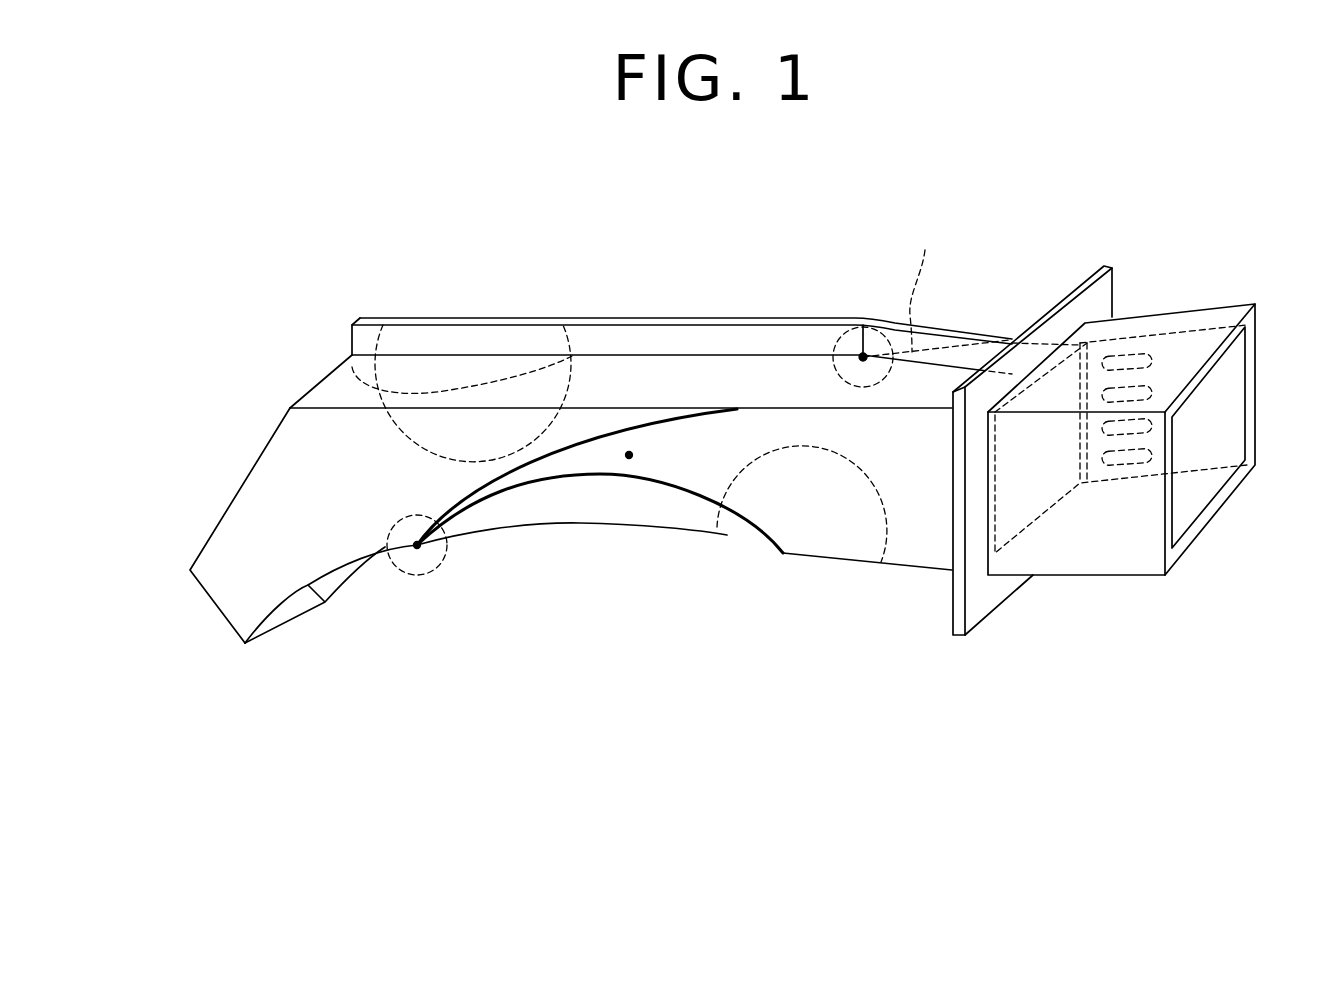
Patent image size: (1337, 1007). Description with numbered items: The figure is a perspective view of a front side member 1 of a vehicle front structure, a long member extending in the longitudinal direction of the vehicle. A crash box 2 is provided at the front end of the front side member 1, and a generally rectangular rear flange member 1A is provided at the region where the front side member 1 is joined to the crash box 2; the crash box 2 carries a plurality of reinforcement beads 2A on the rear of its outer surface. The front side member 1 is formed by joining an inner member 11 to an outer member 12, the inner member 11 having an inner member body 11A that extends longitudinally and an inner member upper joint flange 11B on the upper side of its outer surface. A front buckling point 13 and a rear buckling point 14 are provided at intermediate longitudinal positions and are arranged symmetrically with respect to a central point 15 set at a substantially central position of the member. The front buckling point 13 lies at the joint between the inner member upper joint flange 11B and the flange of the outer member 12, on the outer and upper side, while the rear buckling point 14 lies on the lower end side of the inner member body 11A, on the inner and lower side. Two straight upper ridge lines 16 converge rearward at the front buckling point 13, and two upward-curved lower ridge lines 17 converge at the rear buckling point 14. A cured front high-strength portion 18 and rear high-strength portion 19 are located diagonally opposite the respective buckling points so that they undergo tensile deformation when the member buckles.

The front side member 1 is at (764, 243).
The rear flange member 1A is at (1098, 300).
The crash box 2 is at (1105, 550).
The reinforcement beads 2A is at (1152, 393).
The inner member 11 is at (925, 573).
The inner member body 11A is at (695, 480).
The inner member upper joint flange 11B is at (677, 347).
The outer member 12 is at (1008, 334).
The front buckling point 13 is at (842, 337).
The rear buckling point 14 is at (417, 550).
The central point 15 is at (629, 459).
The upper ridge lines 16 is at (947, 367).
The lower ridge lines 17 is at (540, 470).
The front high-strength portion 18 is at (820, 513).
The rear high-strength portion 19 is at (447, 368).